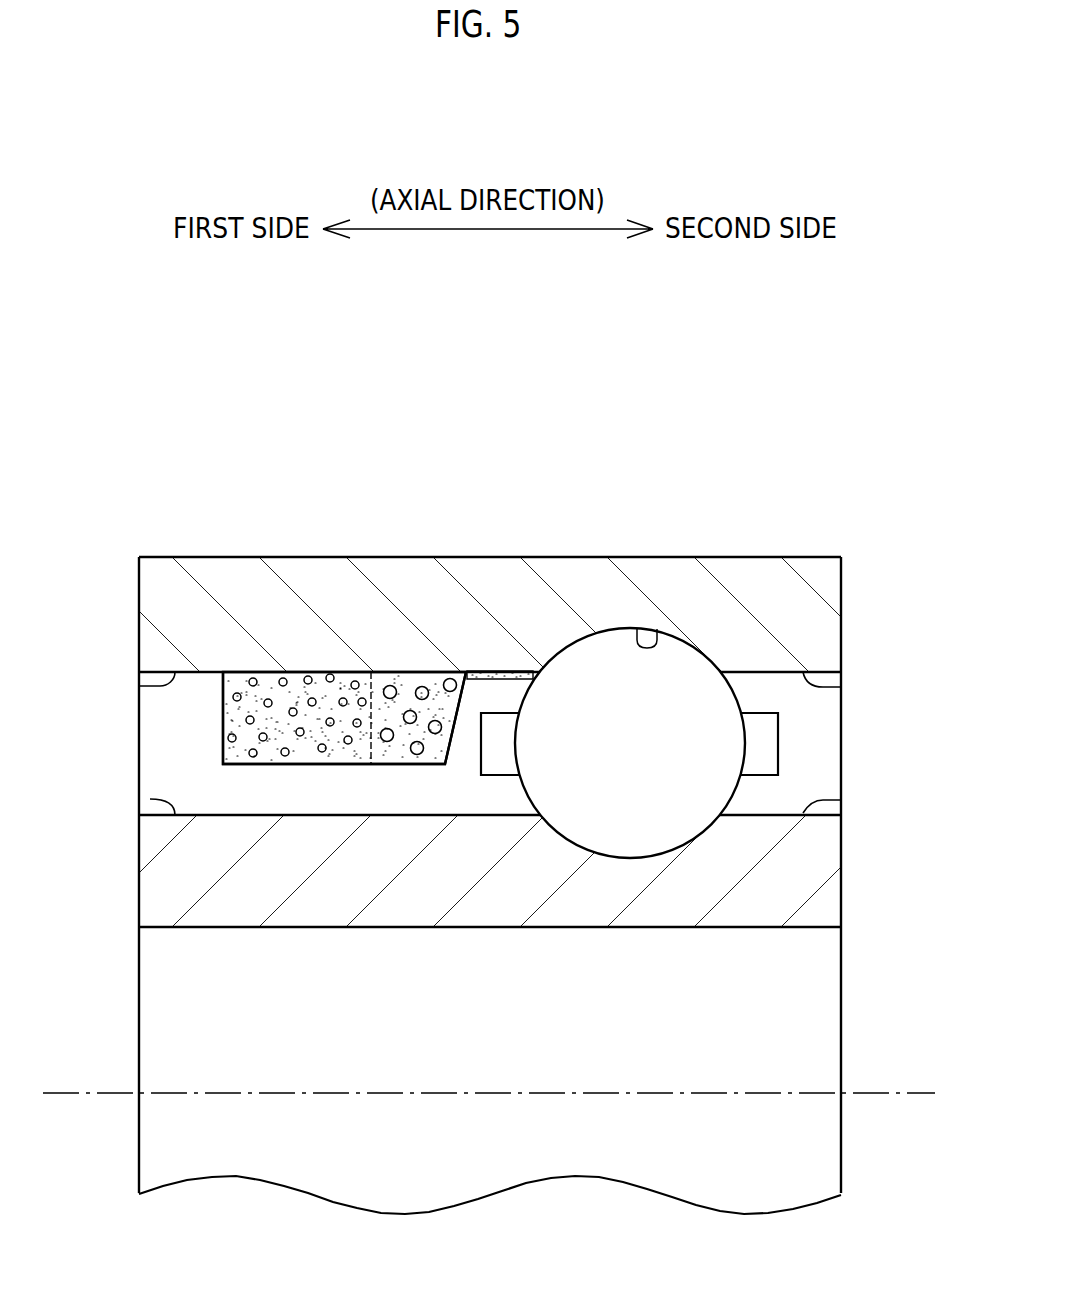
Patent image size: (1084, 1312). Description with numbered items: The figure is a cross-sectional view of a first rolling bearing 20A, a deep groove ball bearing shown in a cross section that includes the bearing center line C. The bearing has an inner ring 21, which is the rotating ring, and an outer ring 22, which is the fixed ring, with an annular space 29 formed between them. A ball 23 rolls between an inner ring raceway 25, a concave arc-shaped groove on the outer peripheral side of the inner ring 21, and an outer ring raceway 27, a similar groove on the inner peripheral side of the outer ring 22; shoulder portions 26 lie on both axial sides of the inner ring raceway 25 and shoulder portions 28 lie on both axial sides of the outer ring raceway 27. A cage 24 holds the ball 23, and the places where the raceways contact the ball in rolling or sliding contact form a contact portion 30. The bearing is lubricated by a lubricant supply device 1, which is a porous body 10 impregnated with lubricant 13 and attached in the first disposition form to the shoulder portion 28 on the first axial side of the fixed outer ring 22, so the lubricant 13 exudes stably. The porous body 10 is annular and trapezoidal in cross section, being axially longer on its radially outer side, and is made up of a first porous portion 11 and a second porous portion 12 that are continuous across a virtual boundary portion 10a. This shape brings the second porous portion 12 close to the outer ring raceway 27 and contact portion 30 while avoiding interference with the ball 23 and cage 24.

The lubricant supply device 1 is at (182, 742).
The porous body 10 is at (437, 497).
The virtual boundary portion 10a is at (372, 740).
The first porous portion 11 is at (297, 687).
The second porous portion 12 is at (410, 680).
The lubricant 13 is at (490, 679).
The first rolling bearing 20A is at (510, 420).
The inner ring 21 is at (817, 872).
The outer ring 22 is at (817, 603).
The ball 23 is at (675, 677).
The cage 24 is at (767, 736).
The inner ring raceway 25 is at (623, 858).
The shoulder portions 26 is at (897, 807).
The outer ring raceway 27 is at (657, 629).
The shoulder portions 28 is at (897, 678).
The annular space 29 is at (787, 706).
The contact portion 30 is at (740, 502).
The center line C is at (505, 1095).